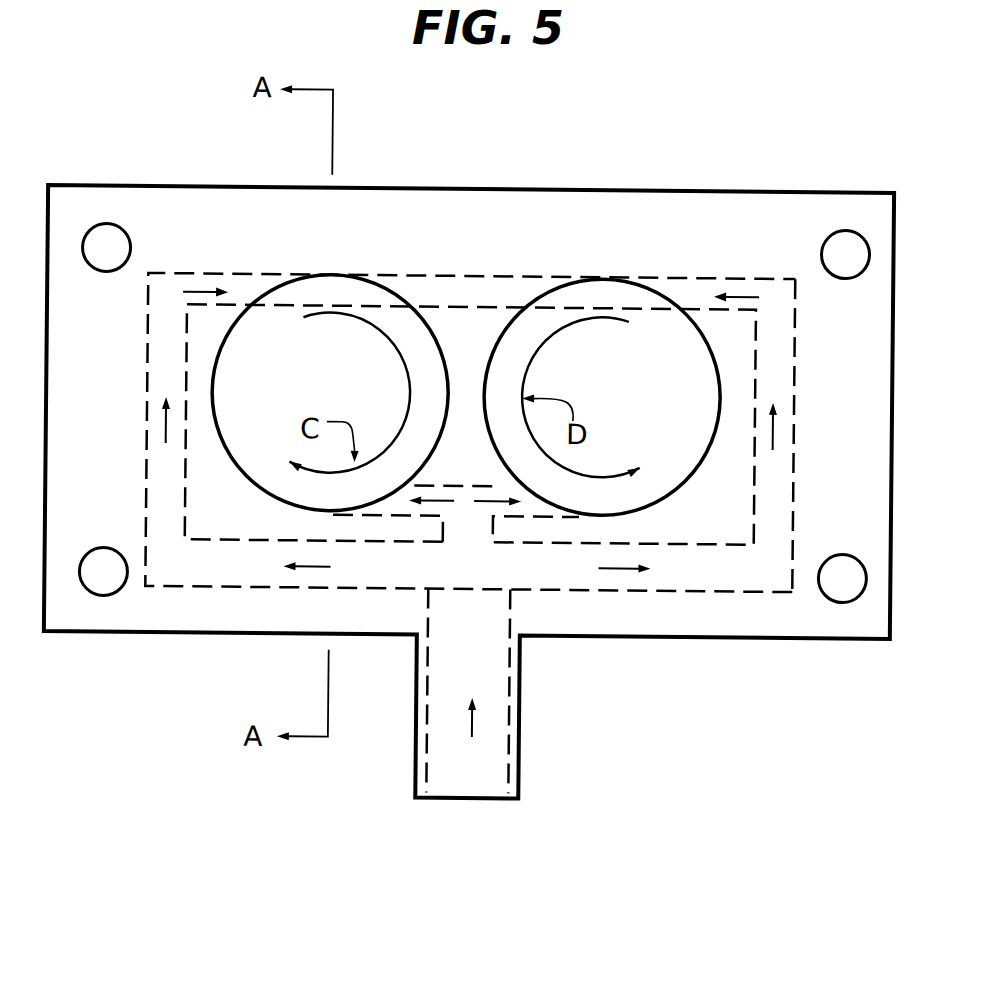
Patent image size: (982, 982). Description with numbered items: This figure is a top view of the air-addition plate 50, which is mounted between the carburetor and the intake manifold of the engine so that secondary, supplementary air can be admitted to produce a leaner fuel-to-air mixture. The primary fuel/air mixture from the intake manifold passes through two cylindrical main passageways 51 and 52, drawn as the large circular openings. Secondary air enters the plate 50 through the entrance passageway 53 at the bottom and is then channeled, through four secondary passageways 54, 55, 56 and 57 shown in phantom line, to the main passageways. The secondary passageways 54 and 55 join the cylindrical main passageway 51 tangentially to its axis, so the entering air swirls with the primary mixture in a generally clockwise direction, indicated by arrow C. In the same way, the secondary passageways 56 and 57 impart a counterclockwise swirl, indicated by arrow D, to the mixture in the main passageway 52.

The air-addition plate 50 is at (622, 178).
The cylindrical main passageway 51 is at (320, 394).
The cylindrical main passageway 52 is at (637, 394).
The entrance passageway 53 is at (481, 786).
The secondary passageway 54 is at (384, 568).
The secondary passageway 55 is at (426, 485).
The secondary passageway 56 is at (531, 512).
The secondary passageway 57 is at (780, 506).